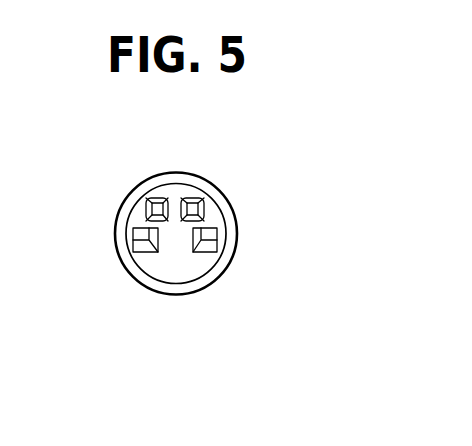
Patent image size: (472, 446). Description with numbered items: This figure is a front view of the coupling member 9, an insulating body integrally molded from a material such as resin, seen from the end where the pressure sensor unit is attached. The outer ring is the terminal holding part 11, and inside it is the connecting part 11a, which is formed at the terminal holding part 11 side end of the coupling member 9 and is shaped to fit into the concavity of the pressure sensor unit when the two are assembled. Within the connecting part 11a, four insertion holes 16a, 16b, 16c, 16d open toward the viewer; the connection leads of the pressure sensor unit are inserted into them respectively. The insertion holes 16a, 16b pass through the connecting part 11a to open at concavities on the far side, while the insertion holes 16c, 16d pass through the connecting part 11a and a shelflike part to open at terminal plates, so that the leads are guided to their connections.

The coupling member 9 is at (238, 235).
The terminal holding part 11 is at (167, 295).
The connecting part 11a is at (217, 263).
The insertion hole 16a is at (195, 198).
The insertion hole 16b is at (160, 198).
The insertion hole 16c is at (212, 228).
The insertion hole 16d is at (145, 228).